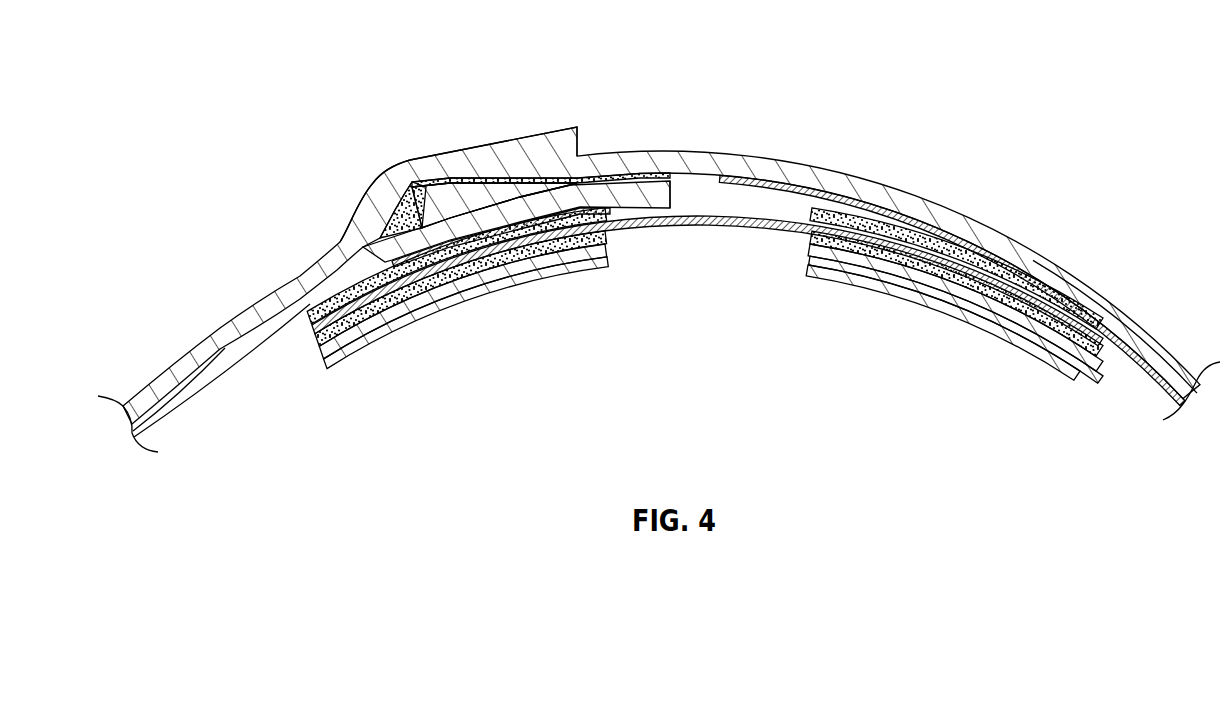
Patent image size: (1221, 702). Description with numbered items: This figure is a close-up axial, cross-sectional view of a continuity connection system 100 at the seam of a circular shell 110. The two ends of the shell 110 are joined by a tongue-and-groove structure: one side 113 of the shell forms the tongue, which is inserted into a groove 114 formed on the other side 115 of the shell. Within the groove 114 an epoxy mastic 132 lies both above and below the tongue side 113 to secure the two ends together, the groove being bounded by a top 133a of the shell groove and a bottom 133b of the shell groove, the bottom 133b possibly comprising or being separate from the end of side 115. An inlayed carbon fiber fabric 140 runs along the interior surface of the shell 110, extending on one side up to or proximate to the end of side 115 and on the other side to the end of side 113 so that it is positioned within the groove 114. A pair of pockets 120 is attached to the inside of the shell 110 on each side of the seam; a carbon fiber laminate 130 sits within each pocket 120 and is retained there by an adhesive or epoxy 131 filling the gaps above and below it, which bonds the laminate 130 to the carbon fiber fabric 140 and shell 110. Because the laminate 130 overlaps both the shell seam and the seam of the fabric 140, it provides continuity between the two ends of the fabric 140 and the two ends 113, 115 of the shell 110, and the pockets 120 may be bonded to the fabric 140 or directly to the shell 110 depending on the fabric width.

The continuity connection system 100 is at (1079, 254).
The shell 110 is at (812, 178).
The side of the shell (tongue) 113 is at (432, 200).
The groove 114 is at (385, 175).
The other side of the shell 115 is at (672, 197).
The pocket 120 is at (1040, 353).
The carbon fiber laminate 130 is at (923, 268).
The epoxy 131 is at (832, 258).
The epoxy mastic 132 is at (547, 156).
The top of shell groove 133a is at (487, 144).
The bottom of shell groove 133b is at (392, 217).
The inlayed carbon fiber fabric 140 is at (735, 186).